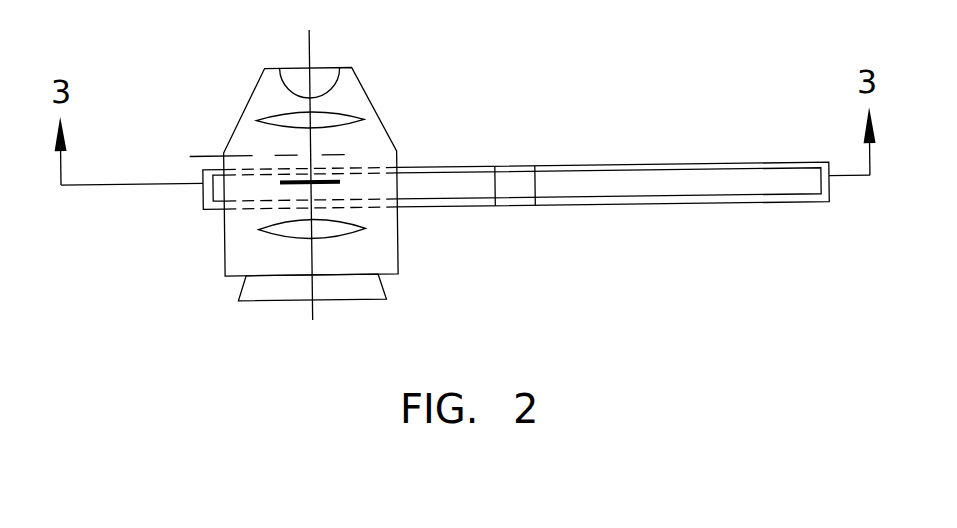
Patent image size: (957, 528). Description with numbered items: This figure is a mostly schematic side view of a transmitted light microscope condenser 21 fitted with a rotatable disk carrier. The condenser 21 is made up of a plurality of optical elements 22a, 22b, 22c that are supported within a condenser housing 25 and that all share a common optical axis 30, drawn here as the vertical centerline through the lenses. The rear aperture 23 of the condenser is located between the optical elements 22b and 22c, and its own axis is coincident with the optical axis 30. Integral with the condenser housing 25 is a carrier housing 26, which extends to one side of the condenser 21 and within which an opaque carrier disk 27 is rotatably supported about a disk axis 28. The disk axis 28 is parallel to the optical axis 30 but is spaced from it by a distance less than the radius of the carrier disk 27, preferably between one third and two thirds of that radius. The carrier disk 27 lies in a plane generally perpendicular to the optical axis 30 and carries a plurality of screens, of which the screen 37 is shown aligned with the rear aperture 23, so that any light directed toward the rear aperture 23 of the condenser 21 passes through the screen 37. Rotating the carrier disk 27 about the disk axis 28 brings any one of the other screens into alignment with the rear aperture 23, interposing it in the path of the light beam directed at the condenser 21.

The transmitted light microscope condenser 21 is at (230, 73).
The optical element 22a is at (341, 71).
The optical element 22b is at (365, 119).
The optical element 22c is at (365, 228).
The rear aperture 23 is at (367, 155).
The condenser housing 25 is at (397, 268).
The carrier housing 26 is at (824, 168).
The carrier disk 27 is at (813, 191).
The disk axis 28 is at (514, 230).
The optical axis 30 is at (311, 30).
The screen 37 is at (303, 183).